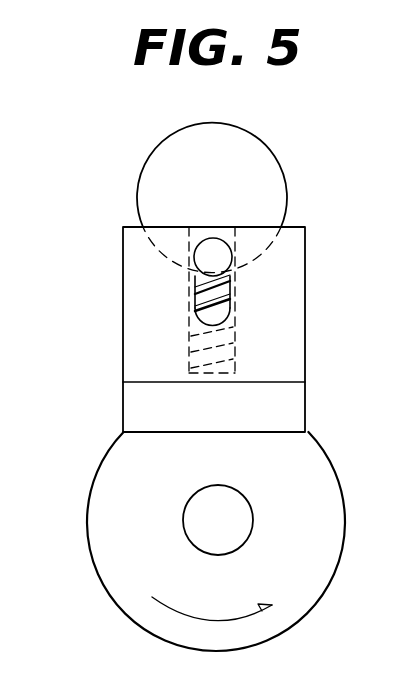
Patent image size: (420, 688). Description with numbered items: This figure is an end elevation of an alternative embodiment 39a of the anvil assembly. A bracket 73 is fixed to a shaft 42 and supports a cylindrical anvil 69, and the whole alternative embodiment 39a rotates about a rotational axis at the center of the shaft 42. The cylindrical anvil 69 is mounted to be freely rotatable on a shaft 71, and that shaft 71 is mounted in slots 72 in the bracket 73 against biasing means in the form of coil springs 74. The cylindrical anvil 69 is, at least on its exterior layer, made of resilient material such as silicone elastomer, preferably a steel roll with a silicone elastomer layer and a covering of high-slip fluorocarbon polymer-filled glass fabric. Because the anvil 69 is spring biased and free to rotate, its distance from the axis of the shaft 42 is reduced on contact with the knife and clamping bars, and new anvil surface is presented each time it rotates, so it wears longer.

The alternative embodiment of the anvil assembly 39a is at (318, 242).
The cylindrical anvil 69 is at (223, 182).
The shaft 71 is at (212, 246).
The slots 72 is at (228, 284).
The bracket 73 is at (306, 343).
The coil springs 74 is at (217, 310).
The shaft 42 is at (345, 495).